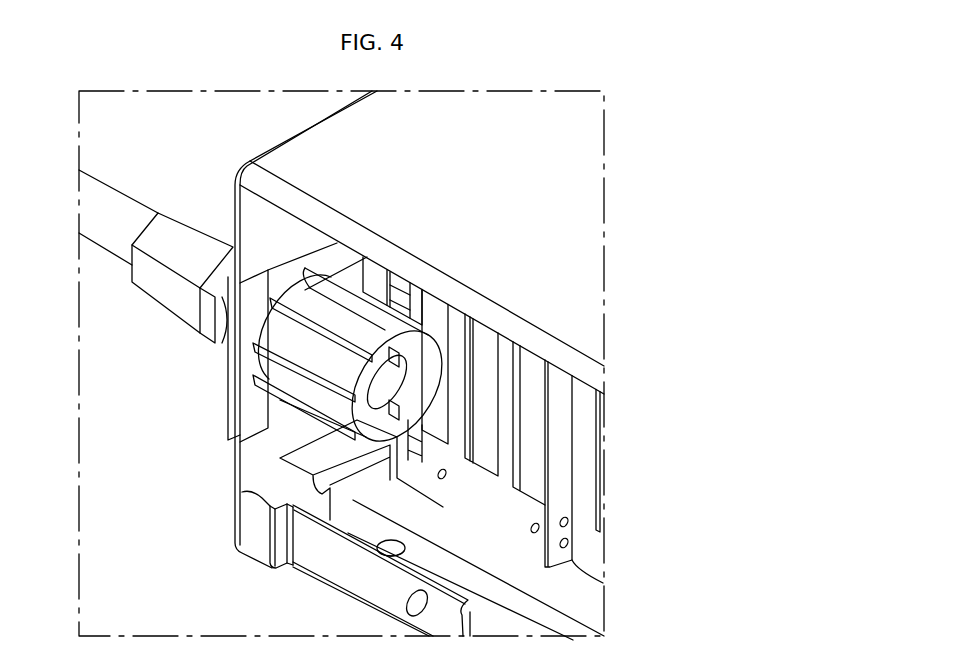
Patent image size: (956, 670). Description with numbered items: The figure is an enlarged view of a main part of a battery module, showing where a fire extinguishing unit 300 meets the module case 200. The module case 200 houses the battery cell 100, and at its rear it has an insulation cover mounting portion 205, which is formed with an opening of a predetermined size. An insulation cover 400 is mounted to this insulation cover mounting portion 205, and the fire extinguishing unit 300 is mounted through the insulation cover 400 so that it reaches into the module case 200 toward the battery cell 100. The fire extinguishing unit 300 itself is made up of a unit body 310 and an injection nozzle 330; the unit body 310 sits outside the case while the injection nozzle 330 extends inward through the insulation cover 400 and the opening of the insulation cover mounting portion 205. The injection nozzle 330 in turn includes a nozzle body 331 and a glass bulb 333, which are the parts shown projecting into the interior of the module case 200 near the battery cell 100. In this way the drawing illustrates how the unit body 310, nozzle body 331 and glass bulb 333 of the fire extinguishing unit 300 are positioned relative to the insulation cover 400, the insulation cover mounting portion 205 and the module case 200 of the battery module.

The battery cell 100 is at (603, 484).
The module case 200 is at (582, 298).
The insulation cover mounting portion 205 is at (228, 432).
The fire extinguishing unit 300 is at (168, 321).
The unit body 310 is at (178, 243).
The injection nozzle 330 is at (258, 359).
The nozzle body 331 is at (333, 368).
The glass bulb 333 is at (290, 322).
The insulation cover 400 is at (309, 423).